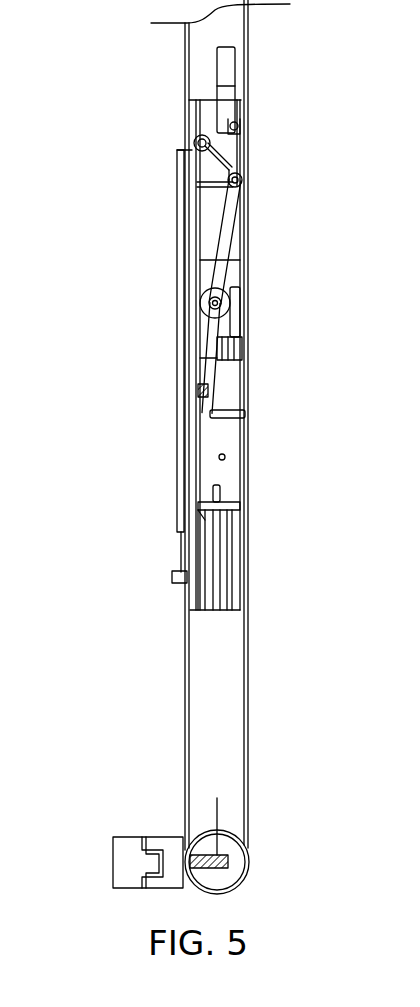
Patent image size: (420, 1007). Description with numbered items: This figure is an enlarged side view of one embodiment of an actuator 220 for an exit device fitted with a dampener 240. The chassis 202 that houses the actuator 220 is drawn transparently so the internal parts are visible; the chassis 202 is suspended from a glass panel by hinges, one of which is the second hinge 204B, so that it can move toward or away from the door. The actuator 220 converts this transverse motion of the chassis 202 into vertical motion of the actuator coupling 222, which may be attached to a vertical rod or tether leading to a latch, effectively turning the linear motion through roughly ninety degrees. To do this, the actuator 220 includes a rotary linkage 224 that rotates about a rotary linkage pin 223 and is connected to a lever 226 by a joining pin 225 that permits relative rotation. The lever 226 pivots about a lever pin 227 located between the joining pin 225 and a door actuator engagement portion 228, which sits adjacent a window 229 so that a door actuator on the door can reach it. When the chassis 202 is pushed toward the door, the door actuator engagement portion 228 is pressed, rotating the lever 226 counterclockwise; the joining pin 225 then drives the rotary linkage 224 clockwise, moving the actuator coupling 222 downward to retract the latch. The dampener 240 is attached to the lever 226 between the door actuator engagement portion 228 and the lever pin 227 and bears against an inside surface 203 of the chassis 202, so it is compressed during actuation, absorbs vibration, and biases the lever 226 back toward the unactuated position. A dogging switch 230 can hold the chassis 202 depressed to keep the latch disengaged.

The chassis 202 is at (240, 707).
The inside surface 203 is at (246, 657).
The second hinge 204B is at (133, 852).
The actuator 220 is at (298, 430).
The actuator coupling 222 is at (228, 67).
The rotary linkage pin 223 is at (200, 143).
The rotary linkage 224 is at (230, 155).
The joining pin 225 is at (242, 181).
The lever 226 is at (226, 248).
The lever pin 227 is at (224, 302).
The door actuator engagement portion 228 is at (200, 428).
The window 229 is at (178, 482).
The dogging switch 230 is at (284, 570).
The dampener 240 is at (242, 368).